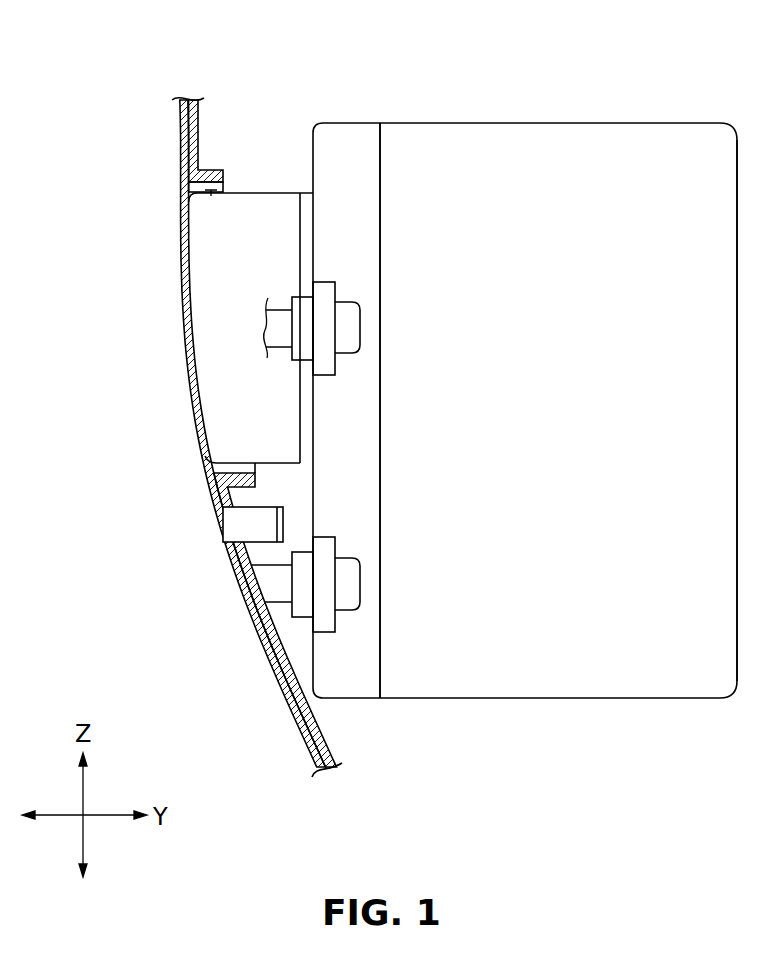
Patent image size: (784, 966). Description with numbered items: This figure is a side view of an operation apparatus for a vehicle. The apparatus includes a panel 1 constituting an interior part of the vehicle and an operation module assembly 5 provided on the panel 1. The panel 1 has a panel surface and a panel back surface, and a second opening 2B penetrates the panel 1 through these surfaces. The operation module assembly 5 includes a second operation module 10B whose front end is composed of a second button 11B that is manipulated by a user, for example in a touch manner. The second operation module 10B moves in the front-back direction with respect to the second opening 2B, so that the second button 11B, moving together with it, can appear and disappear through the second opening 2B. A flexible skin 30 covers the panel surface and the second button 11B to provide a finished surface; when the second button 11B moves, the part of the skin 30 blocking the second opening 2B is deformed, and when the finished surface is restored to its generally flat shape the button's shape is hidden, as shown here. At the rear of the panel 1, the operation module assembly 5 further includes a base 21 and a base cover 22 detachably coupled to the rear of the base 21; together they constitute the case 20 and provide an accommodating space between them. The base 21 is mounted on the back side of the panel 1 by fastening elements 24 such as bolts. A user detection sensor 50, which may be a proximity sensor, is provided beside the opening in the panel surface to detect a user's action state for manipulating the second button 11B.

The panel 1 is at (198, 127).
The second opening 2B is at (210, 193).
The operation module assembly 5 is at (618, 108).
The second operation module 10B is at (275, 178).
The second button 11B is at (210, 353).
The case 20 is at (457, 53).
The base 21 is at (362, 137).
The base cover 22 is at (430, 137).
The fastening elements 24 is at (352, 327).
The skin 30 is at (262, 640).
The user detection sensor 50 is at (240, 526).